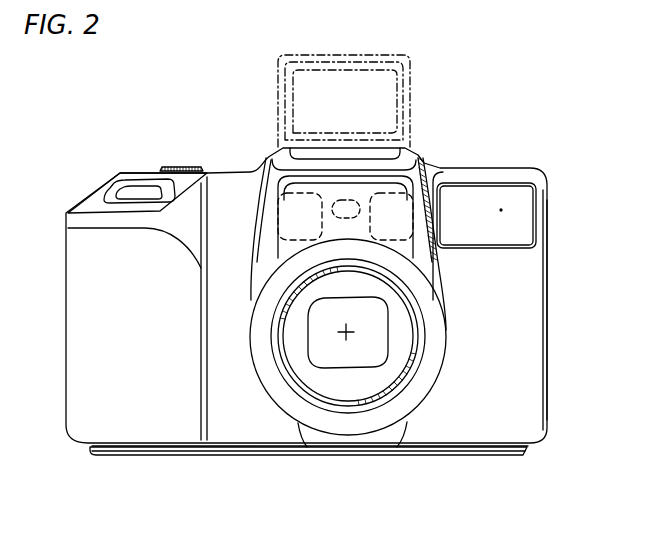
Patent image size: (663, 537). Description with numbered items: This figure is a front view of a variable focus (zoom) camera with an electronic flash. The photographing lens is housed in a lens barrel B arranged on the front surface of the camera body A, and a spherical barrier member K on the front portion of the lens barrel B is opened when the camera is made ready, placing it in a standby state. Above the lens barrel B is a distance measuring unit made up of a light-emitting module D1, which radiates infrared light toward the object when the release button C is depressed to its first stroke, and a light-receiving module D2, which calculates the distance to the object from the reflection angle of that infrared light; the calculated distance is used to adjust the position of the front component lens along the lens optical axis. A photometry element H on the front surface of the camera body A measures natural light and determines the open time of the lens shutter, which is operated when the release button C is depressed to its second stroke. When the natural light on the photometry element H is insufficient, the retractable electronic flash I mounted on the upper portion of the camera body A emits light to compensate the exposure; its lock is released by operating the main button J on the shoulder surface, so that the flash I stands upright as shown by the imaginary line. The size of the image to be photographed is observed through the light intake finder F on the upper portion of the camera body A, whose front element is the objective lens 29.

The camera body A is at (82, 322).
The lens barrel B is at (288, 412).
The release button C is at (132, 188).
The main button J is at (180, 166).
The light-emitting module D1 is at (390, 193).
The light-receiving module D2 is at (300, 193).
The photometry element H is at (347, 201).
The retractable electronic flash I is at (333, 156).
The objective lens 29 is at (508, 197).
The light intake finder F is at (539, 211).
The barrier member K is at (383, 355).